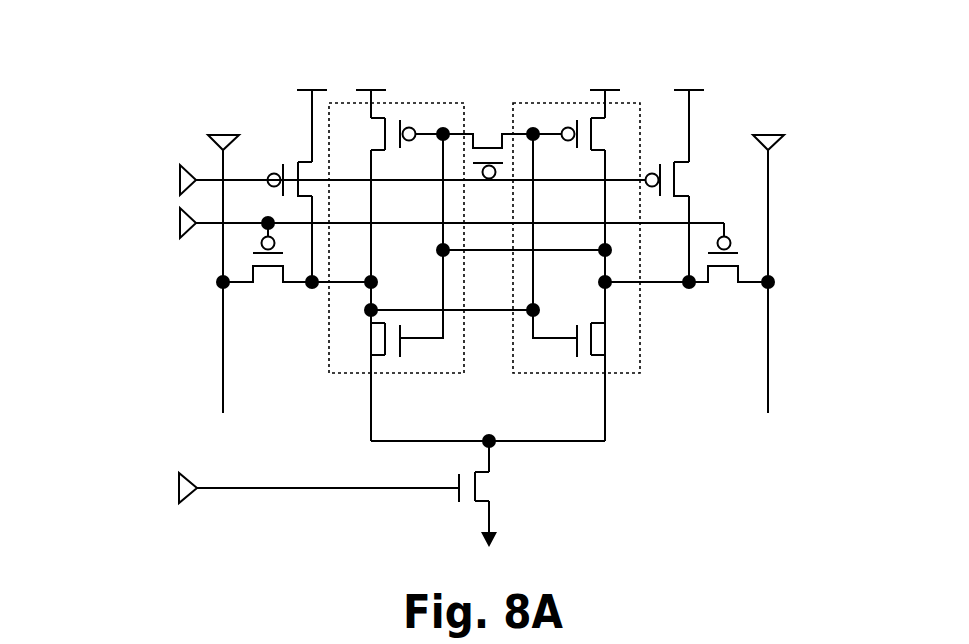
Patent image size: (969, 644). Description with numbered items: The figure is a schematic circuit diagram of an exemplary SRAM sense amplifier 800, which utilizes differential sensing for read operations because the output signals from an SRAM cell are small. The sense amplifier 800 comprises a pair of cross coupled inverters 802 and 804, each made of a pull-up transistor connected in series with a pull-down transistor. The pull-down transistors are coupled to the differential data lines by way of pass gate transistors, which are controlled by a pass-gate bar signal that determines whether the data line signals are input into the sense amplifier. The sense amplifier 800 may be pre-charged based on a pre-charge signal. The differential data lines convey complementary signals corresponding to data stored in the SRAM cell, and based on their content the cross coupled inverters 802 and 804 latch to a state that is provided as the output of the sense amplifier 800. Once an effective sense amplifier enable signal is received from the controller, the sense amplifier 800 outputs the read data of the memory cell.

The sense amplifier 800 is at (86, 44).
The cross coupled inverter 802 is at (445, 103).
The cross coupled inverter 804 is at (629, 103).